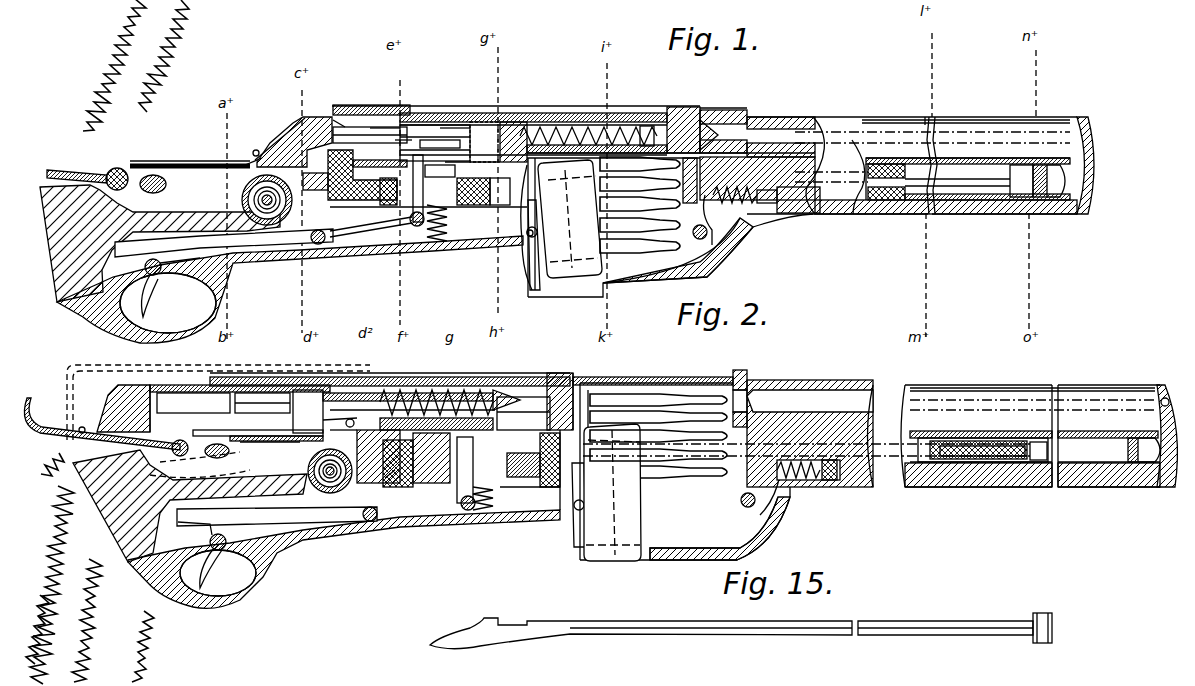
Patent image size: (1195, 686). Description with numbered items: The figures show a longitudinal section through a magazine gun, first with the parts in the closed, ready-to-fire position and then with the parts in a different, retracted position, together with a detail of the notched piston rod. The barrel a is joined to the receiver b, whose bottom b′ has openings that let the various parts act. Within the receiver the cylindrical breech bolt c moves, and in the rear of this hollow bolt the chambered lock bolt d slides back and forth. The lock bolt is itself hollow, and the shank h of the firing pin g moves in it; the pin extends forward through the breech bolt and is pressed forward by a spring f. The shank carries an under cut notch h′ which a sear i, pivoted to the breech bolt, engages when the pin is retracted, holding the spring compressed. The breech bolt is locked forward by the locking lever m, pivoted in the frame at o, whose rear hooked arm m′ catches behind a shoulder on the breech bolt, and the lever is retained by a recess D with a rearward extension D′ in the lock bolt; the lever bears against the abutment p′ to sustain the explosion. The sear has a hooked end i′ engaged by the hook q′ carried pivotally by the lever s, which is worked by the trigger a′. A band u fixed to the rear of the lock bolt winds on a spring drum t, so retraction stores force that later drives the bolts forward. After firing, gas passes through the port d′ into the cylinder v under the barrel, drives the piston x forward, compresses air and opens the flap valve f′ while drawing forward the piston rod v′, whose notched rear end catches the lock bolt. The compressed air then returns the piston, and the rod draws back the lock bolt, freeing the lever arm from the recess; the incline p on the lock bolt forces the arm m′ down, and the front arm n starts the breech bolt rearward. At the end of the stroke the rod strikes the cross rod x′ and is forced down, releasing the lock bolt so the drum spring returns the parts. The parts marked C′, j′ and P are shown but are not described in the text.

In FIG. 1, the barrel a is at (812, 120).
In FIG. 1, the trigger a′ is at (168, 303).
In FIG. 2, the trigger a′ is at (218, 573).
In FIG. 1, the receiver b is at (372, 110).
In FIG. 2, the receiver b is at (280, 472).
In FIG. 1, the bottom of the receiver b′ is at (382, 128).
In FIG. 2, the bottom of the receiver b′ is at (440, 485).
In FIG. 1, the breech bolt c is at (562, 122).
In FIG. 2, the breech bolt c is at (345, 400).
In FIG. 1, the bolt collar C′ is at (690, 110).
In FIG. 2, the bolt collar C′ is at (572, 386).
In FIG. 1, the lock bolt d is at (300, 140).
In FIG. 2, the lock bolt d is at (168, 385).
In FIG. 1, the recess D is at (283, 148).
In FIG. 2, the recess D is at (140, 388).
In FIG. 2, the rearward extension of the recess D′ is at (100, 400).
In FIG. 1, the port d′ is at (930, 118).
In FIG. 2, the port d′ is at (975, 420).
In FIG. 1, the spring f is at (642, 125).
In FIG. 2, the spring f is at (485, 400).
In FIG. 1, the flap valve f′ is at (1042, 198).
In FIG. 2, the flap valve f′ is at (1132, 466).
In FIG. 1, the firing pin g is at (616, 125).
In FIG. 2, the shank of the firing pin h is at (270, 392).
In FIG. 2, the under cut notch h′ is at (320, 392).
In FIG. 2, the sear i is at (385, 400).
In FIG. 1, the hooked end of the sear i′ is at (470, 135).
In FIG. 2, the hooked end of the sear i′ is at (270, 442).
In FIG. 1, the bolt stop j′ is at (492, 138).
In FIG. 1, the locking lever m is at (360, 203).
In FIG. 2, the locking lever m is at (395, 488).
In FIG. 1, the rear hooked arm m′ is at (338, 114).
In FIG. 2, the rear hooked arm m′ is at (452, 400).
In FIG. 1, the arm n is at (527, 180).
In FIG. 2, the arm n is at (532, 482).
In FIG. 1, the pivot o is at (509, 208).
In FIG. 2, the pivot o is at (530, 487).
In FIG. 2, the incline p is at (388, 484).
In FIG. 1, the abutment p′ is at (315, 192).
In FIG. 1, the bolt handle P is at (340, 125).
In FIG. 1, the trigger block q′ is at (420, 246).
In FIG. 2, the trigger block q′ is at (521, 460).
In FIG. 1, the lever s is at (224, 243).
In FIG. 2, the lever s is at (277, 516).
In FIG. 1, the drum t is at (241, 196).
In FIG. 2, the drum t is at (352, 478).
In FIG. 1, the band u is at (262, 172).
In FIG. 2, the band u is at (176, 455).
In FIG. 1, the cylinder v is at (930, 214).
In FIG. 2, the cylinder v is at (1080, 420).
In FIG. 1, the piston rod v′ is at (912, 200).
In FIG. 2, the piston rod v′ is at (620, 440).
In FIG. 1, the piston x is at (1014, 198).
In FIG. 2, the piston x is at (1030, 460).
In FIG. 1, the cross rod x′ is at (121, 170).